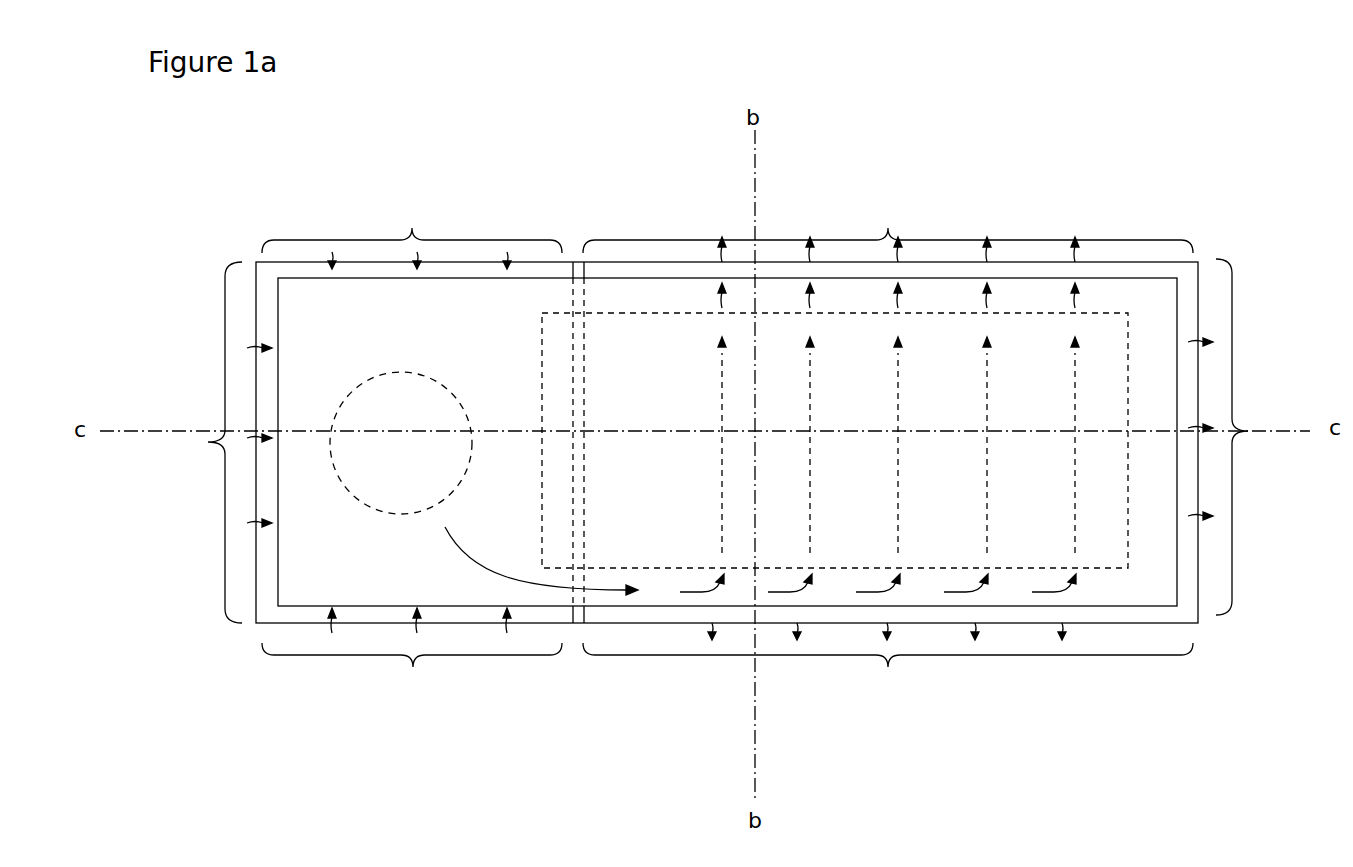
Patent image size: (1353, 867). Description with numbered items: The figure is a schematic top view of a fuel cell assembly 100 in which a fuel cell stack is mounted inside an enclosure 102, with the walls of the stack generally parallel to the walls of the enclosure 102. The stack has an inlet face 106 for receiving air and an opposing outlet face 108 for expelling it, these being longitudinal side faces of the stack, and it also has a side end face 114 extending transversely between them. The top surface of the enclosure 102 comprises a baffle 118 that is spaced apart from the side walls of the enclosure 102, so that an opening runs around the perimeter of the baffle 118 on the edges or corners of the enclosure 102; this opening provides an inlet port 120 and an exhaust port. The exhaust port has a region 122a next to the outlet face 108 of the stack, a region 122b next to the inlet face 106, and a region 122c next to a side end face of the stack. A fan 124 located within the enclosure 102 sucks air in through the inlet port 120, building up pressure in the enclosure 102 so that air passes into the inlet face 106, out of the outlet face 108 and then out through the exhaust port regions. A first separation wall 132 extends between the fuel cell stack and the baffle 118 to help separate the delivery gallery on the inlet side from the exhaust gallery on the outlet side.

The fuel cell assembly 100 is at (1130, 147).
The enclosure 102 is at (1198, 280).
The inlet face 106 is at (670, 573).
The outlet face 108 is at (655, 313).
The side end face 114 is at (540, 500).
The baffle 118 is at (278, 311).
The inlet port 120 is at (364, 448).
The exhaust port region next to outlet face 122a is at (888, 256).
The exhaust port region next to inlet face 122b is at (888, 658).
The exhaust port region next to side end face 122c is at (1243, 437).
The fan 124 is at (362, 503).
The first separation wall 132 is at (573, 295).